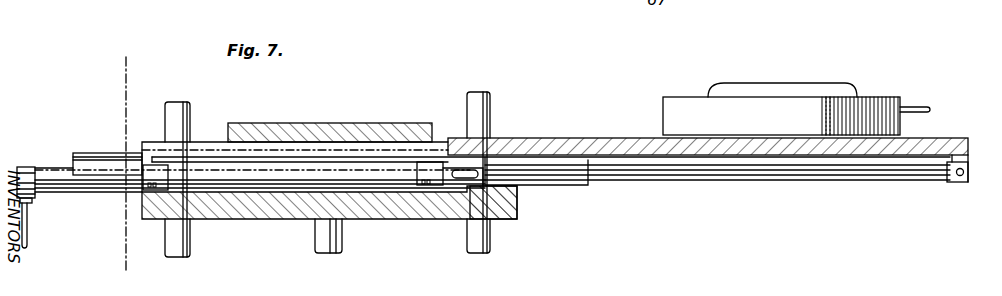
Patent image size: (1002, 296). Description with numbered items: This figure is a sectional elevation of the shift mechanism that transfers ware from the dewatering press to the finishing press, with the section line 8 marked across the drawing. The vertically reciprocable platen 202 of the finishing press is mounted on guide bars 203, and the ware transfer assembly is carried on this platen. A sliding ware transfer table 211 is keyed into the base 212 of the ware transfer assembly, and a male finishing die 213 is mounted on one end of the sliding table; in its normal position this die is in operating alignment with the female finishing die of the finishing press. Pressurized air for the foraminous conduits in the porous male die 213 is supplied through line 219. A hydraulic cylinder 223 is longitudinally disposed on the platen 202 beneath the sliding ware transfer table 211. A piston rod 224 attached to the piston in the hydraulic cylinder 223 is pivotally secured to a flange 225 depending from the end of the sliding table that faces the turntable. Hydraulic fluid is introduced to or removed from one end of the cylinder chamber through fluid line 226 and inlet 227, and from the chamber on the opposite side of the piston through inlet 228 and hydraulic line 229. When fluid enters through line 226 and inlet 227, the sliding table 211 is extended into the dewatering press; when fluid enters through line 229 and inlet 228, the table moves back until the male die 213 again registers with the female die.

The section line 8- 8 is at (150, 71).
The vertically reciprocable platen 202 is at (380, 221).
The guide bars 203 is at (190, 117).
The sliding ware transfer table 211 is at (950, 138).
The base 212 is at (99, 152).
The male finishing die 213 is at (683, 97).
The line 219 is at (920, 106).
The hydraulic cylinder 223 is at (270, 180).
The piston rod 224 is at (726, 180).
The flange 225 is at (961, 179).
The fluid line 226 is at (28, 240).
The inlet 227 is at (35, 198).
The inlet 228 is at (505, 213).
The hydraulic line 229 is at (460, 178).